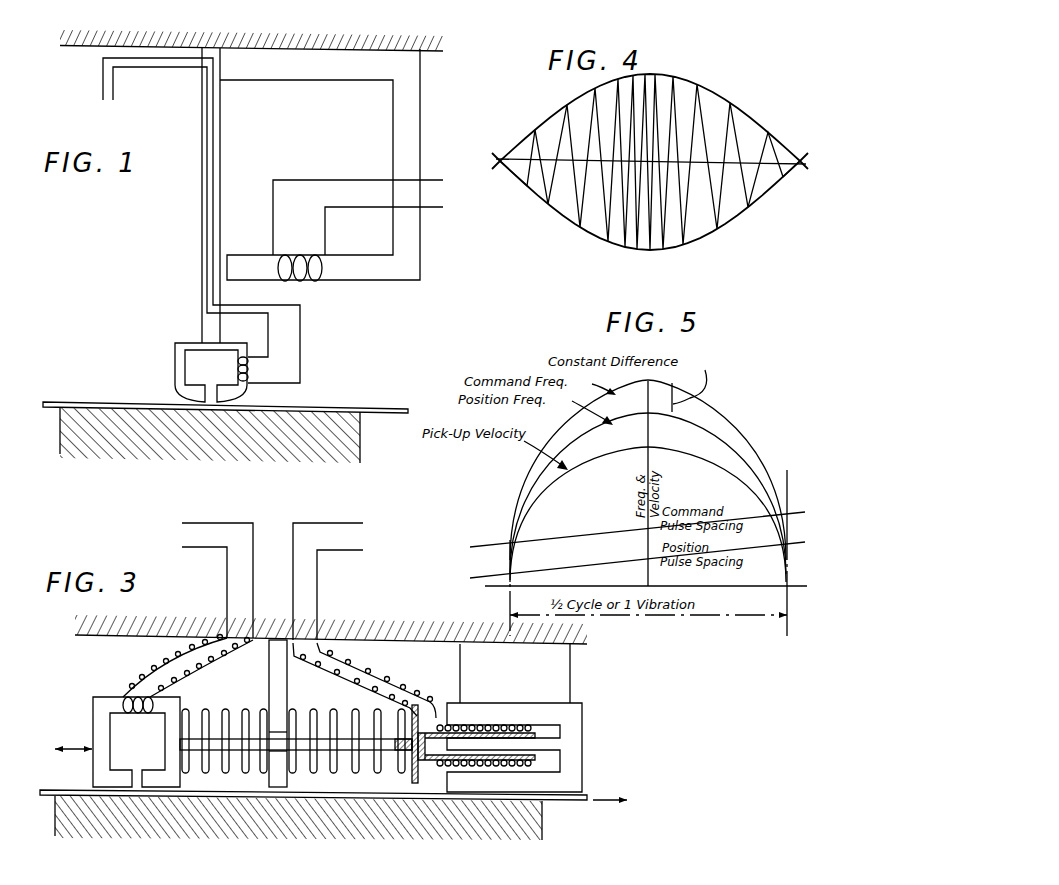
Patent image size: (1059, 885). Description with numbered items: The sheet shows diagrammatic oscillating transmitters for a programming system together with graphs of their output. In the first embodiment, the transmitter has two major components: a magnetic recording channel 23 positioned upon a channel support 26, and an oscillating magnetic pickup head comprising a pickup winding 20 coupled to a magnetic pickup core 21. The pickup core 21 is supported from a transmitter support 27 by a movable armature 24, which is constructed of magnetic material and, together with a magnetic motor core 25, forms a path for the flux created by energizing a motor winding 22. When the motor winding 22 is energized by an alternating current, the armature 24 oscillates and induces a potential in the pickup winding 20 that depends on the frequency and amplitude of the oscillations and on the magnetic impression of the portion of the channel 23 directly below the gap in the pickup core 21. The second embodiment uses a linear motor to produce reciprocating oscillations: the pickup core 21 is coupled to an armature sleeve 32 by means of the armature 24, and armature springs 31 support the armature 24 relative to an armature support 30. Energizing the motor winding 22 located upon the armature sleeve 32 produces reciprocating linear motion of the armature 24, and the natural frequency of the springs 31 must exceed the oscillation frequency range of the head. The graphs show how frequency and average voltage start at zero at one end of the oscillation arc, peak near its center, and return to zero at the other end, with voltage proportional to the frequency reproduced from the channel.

In FIG. 1, the pickup winding 20 is at (100, 86).
In FIG. 3, the pickup winding 20 is at (122, 696).
In FIG. 1, the magnetic pickup core 21 is at (175, 378).
In FIG. 3, the magnetic pickup core 21 is at (93, 709).
In FIG. 1, the motor winding 22 is at (434, 180).
In FIG. 3, the motor winding 22 is at (443, 724).
In FIG. 1, the magnetic recording channel 23 is at (342, 408).
In FIG. 3, the magnetic recording channel 23 is at (590, 797).
In FIG. 1, the armature 24 is at (201, 203).
In FIG. 3, the armature 24 is at (197, 742).
In FIG. 1, the magnetic motor core 25 is at (421, 97).
In FIG. 3, the magnetic motor core 25 is at (578, 729).
In FIG. 1, the channel support 26 is at (348, 442).
In FIG. 3, the channel support 26 is at (525, 832).
In FIG. 1, the transmitter support 27 is at (292, 47).
In FIG. 3, the armature support 30 is at (269, 674).
In FIG. 3, the armature springs 31 is at (210, 709).
In FIG. 3, the armature sleeve 32 is at (437, 760).